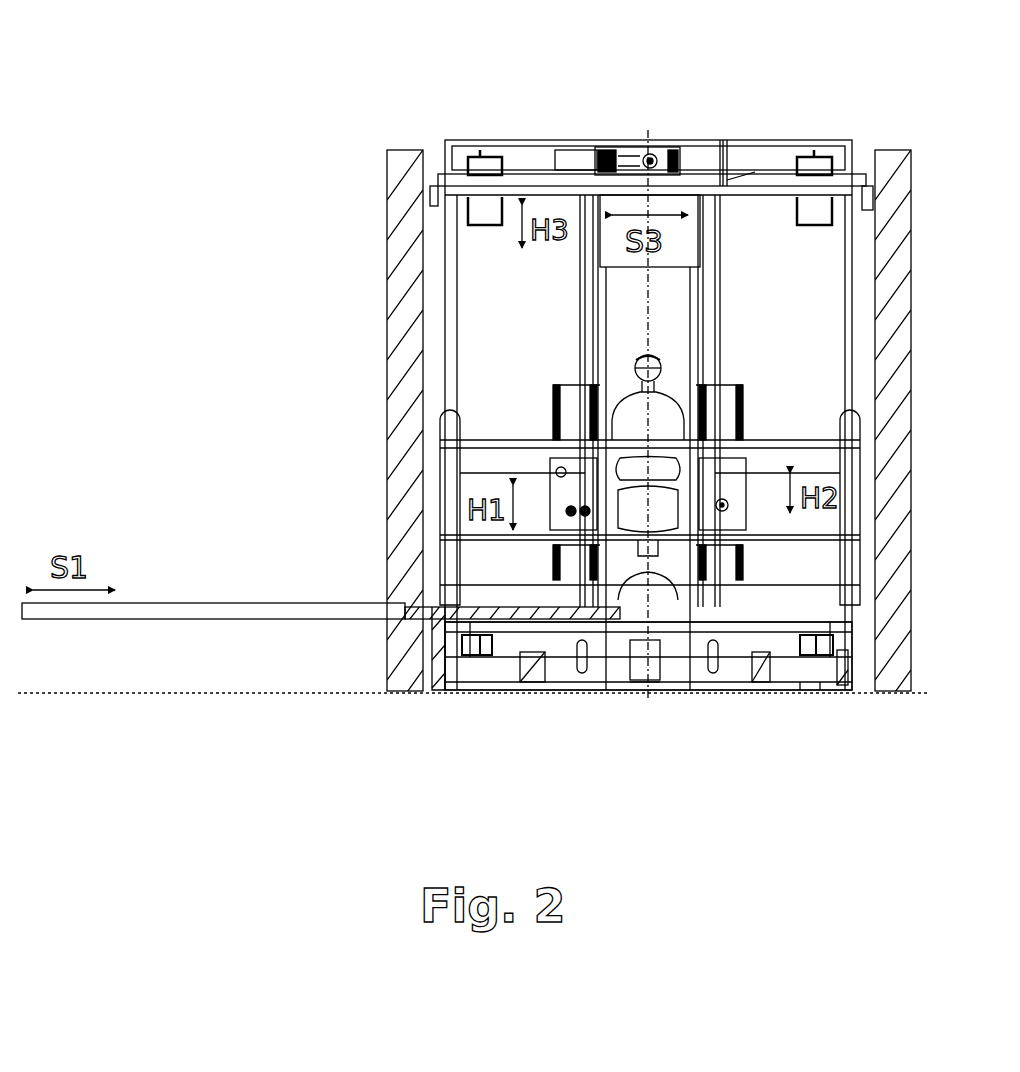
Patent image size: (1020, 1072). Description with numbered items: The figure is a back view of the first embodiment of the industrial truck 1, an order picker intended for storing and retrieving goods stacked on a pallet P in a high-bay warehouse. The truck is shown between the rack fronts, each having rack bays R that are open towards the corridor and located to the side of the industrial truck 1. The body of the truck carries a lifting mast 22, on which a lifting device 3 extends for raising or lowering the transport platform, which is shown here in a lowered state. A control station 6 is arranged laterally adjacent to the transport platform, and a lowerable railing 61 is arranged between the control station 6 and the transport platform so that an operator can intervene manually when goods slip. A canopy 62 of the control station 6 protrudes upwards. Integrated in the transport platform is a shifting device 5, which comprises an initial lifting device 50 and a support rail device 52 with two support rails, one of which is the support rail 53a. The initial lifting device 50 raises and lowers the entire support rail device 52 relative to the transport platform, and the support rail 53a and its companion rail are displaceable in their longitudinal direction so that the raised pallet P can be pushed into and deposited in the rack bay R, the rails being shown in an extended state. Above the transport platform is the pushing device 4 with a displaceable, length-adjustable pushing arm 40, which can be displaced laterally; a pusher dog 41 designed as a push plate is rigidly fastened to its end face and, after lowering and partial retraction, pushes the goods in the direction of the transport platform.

The industrial truck 1 is at (485, 125).
The pushing arm 40 is at (549, 140).
The canopy 62 is at (585, 140).
The pushing device 4 is at (752, 138).
The pusher dog 41 is at (435, 198).
The rack bay R is at (405, 298).
The lifting mast 22 is at (712, 280).
The railing 61 is at (518, 447).
The lifting device 3 is at (700, 428).
The control station 6 is at (540, 472).
The support rail device 52 is at (465, 605).
The support rail 53a is at (400, 607).
The pallet P is at (327, 614).
The shifting device 5 is at (522, 642).
The initial lifting device 50 is at (607, 635).